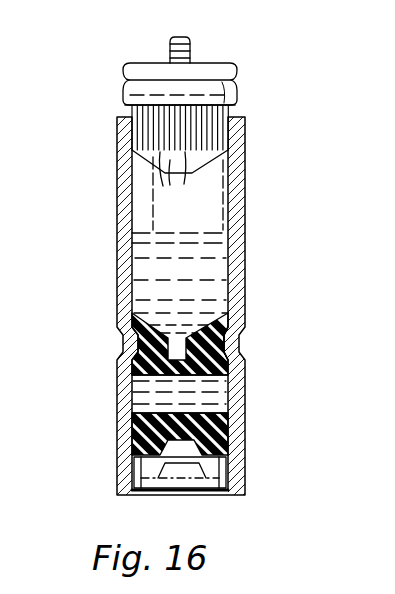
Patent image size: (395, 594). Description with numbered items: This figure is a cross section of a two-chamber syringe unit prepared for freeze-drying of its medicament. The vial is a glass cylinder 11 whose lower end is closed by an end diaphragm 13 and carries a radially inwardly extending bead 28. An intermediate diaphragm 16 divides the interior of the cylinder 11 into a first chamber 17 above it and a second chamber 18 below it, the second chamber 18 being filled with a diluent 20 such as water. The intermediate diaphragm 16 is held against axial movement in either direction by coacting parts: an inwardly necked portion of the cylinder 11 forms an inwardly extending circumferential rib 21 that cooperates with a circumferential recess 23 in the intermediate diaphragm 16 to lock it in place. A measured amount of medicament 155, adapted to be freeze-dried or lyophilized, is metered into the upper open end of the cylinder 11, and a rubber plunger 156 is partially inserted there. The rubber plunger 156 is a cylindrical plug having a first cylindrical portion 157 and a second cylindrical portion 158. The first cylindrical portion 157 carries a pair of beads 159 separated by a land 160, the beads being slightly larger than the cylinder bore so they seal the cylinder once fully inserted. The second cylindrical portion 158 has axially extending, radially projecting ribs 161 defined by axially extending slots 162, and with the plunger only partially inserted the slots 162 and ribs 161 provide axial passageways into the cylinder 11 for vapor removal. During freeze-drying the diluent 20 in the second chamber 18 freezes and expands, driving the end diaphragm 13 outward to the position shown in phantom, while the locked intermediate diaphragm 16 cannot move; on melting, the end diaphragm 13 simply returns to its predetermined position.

The glass cylinder 11 is at (122, 217).
The end diaphragm 13 is at (220, 425).
The intermediate diaphragm 16 is at (236, 322).
The first chamber 17 is at (222, 216).
The second chamber 18 is at (218, 392).
The diluent 20 is at (143, 393).
The circumferential rib 21 is at (140, 330).
The circumferential recess 23 is at (241, 347).
The bead 28 is at (222, 490).
The medicament 155 is at (215, 270).
The rubber plunger 156 is at (214, 61).
The first cylindrical portion 157 is at (134, 64).
The second cylindrical portion 158 is at (227, 116).
The beads 159 is at (237, 76).
The land 160 is at (126, 84).
The ribs 161 is at (140, 138).
The slots 162 is at (176, 180).